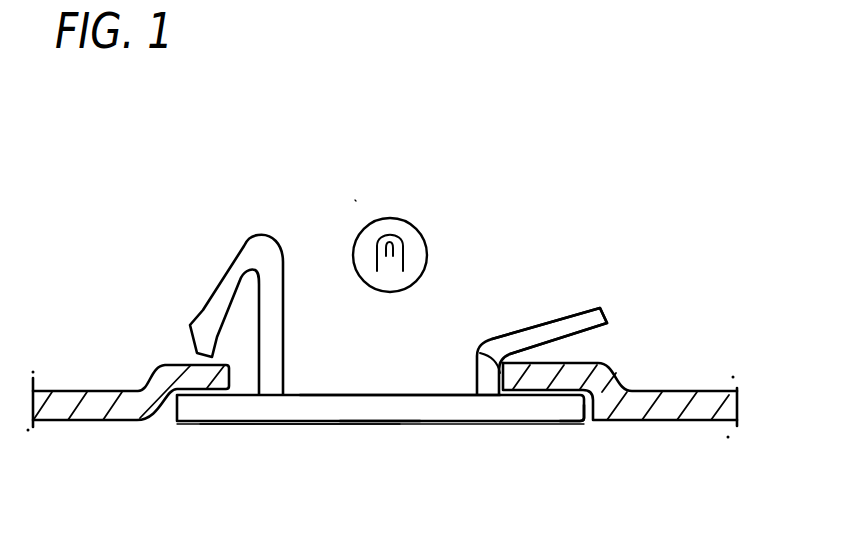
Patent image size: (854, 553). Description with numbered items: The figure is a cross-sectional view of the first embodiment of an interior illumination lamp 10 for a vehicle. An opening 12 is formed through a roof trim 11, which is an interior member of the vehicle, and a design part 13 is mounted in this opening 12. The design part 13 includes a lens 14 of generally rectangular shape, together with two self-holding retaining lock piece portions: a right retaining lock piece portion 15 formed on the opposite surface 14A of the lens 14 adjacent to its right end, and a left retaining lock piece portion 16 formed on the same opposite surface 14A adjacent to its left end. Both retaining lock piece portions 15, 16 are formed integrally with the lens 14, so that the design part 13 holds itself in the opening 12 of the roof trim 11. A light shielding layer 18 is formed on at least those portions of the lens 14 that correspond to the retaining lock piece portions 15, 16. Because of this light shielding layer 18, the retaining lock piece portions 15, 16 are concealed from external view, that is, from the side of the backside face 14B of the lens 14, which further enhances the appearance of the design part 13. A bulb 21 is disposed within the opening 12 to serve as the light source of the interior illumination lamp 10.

The interior illumination lamp 10 is at (350, 192).
The roof trim 11 is at (675, 423).
The opening 12 is at (475, 353).
The design part 13 is at (370, 448).
The lens 14 is at (440, 412).
The opposite surface of the lens 14A is at (407, 394).
The backside face of the lens 14B is at (303, 422).
The right retaining lock piece portion 15 is at (583, 311).
The left retaining lock piece portion 16 is at (242, 247).
The light shielding layer 18 is at (540, 426).
The bulb 21 is at (418, 228).